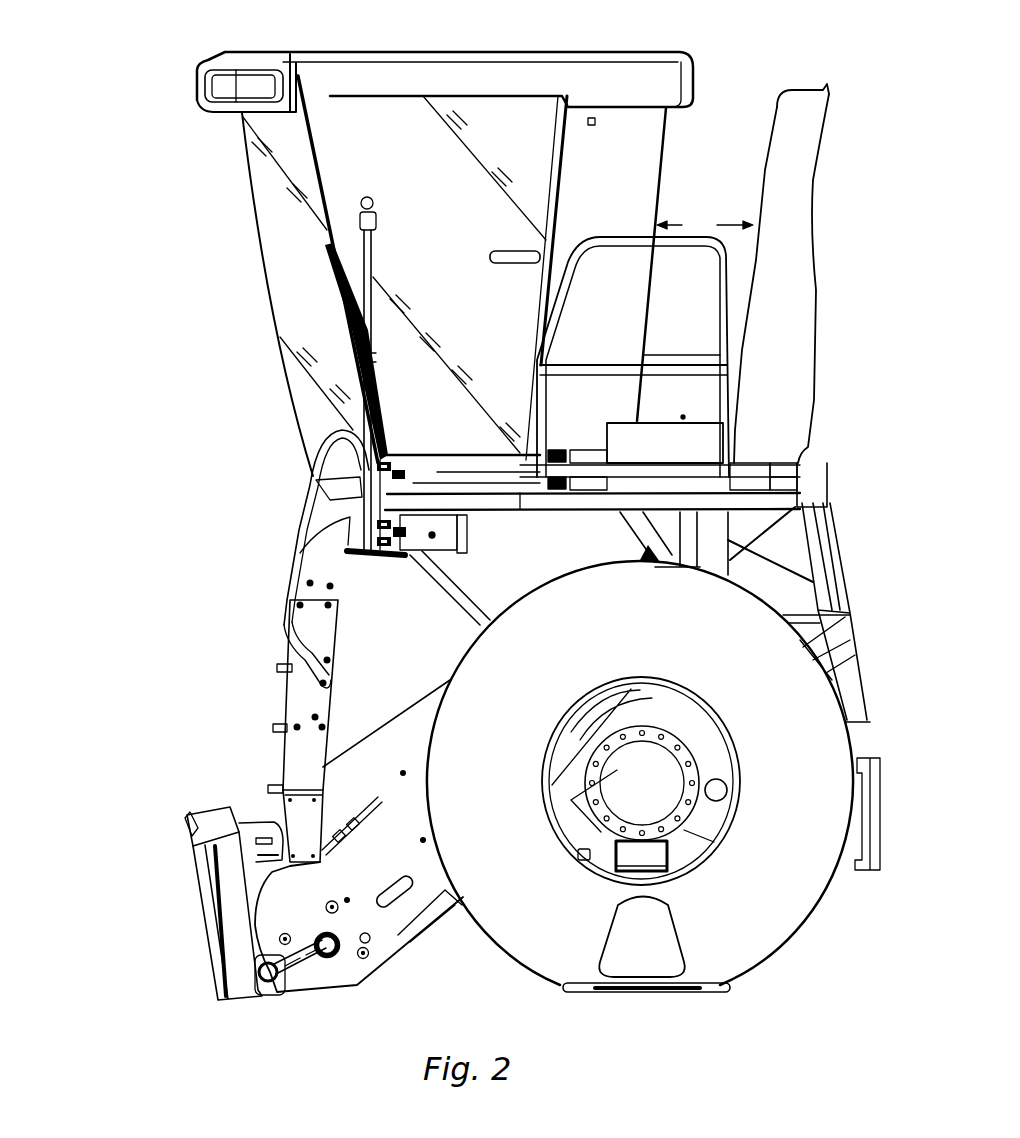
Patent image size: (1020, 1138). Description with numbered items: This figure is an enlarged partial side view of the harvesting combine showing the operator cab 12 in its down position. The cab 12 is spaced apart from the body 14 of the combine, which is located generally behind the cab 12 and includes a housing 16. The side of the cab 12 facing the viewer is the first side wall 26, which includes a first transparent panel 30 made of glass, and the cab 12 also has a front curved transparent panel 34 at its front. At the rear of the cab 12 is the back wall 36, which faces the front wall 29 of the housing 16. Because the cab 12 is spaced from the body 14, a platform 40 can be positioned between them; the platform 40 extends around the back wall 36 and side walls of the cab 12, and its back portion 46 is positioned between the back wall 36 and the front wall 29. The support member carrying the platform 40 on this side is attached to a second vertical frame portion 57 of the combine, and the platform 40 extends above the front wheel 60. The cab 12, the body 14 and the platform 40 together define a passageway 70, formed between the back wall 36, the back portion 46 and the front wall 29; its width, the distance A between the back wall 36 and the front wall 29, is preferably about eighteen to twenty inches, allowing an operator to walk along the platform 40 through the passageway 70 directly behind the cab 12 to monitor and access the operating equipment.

The operator cab 12 is at (170, 133).
The body 14 is at (858, 131).
The housing 16 is at (800, 265).
The first side wall 26 is at (640, 142).
The front wall 29 is at (770, 142).
The first transparent panel 30 is at (457, 147).
The front curved transparent panel 34 is at (282, 253).
The back wall 36 is at (657, 202).
The platform 40 is at (688, 342).
The back portion 46 is at (692, 400).
The second vertical frame portion 57 is at (712, 547).
The front wheel 60 is at (758, 937).
The passageway 70 is at (710, 164).